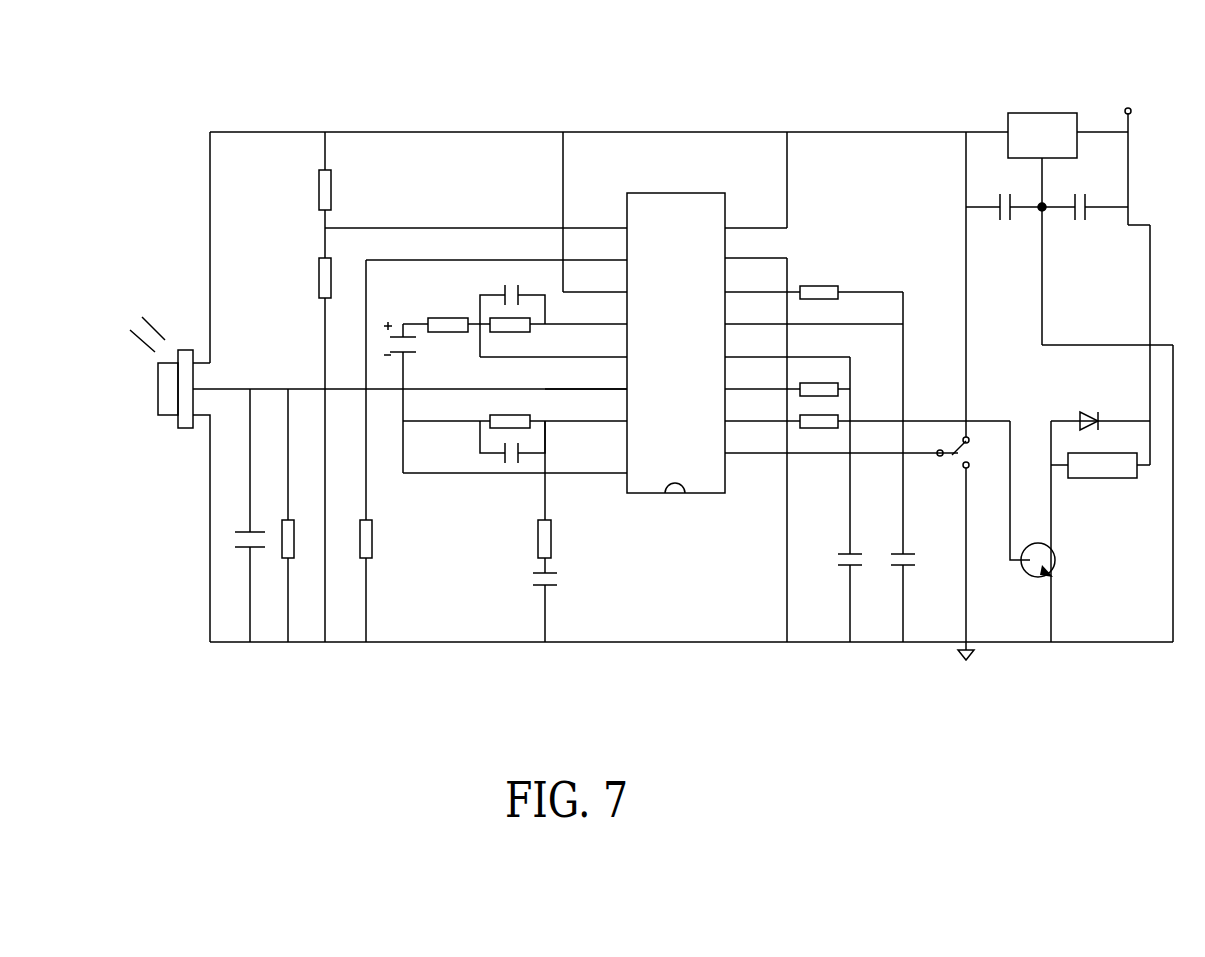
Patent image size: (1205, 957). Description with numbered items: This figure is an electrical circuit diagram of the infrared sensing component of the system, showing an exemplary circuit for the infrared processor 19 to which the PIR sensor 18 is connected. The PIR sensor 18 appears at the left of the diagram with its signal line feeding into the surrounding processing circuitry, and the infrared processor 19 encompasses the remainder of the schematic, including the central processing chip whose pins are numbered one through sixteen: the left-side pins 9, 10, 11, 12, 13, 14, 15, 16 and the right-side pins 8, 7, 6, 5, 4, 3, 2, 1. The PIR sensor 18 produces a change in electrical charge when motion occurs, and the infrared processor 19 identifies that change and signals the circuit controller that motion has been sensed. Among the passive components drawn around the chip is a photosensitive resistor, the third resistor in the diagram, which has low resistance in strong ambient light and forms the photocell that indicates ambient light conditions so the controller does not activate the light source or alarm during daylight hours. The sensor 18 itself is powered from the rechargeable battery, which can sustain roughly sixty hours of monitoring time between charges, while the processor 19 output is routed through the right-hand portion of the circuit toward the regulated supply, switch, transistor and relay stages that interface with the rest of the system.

The PIR sensor 18 is at (158, 407).
The infrared processor 19 is at (609, 342).
The BISS0001 pin 1 is at (841, 443).
The BISS0001 pin 2 is at (762, 411).
The BISS0001 pin 3 is at (762, 379).
The BISS0001 pin 4 is at (787, 347).
The BISS0001 pin 5 is at (814, 314).
The BISS0001 pin 6 is at (762, 282).
The BISS0001 pin 7 is at (756, 440).
The BISS0001 pin 8 is at (756, 180).
The BISS0001 pin 9 is at (476, 218).
The BISS0001 pin 10 is at (496, 250).
The BISS0001 pin 11 is at (595, 282).
The BISS0001 pin 12 is at (578, 314).
The BISS0001 pin 13 is at (553, 347).
The BISS0001 pin 14 is at (586, 379).
The BISS0001 pin 15 is at (515, 411).
The BISS0001 pin 16 is at (515, 463).